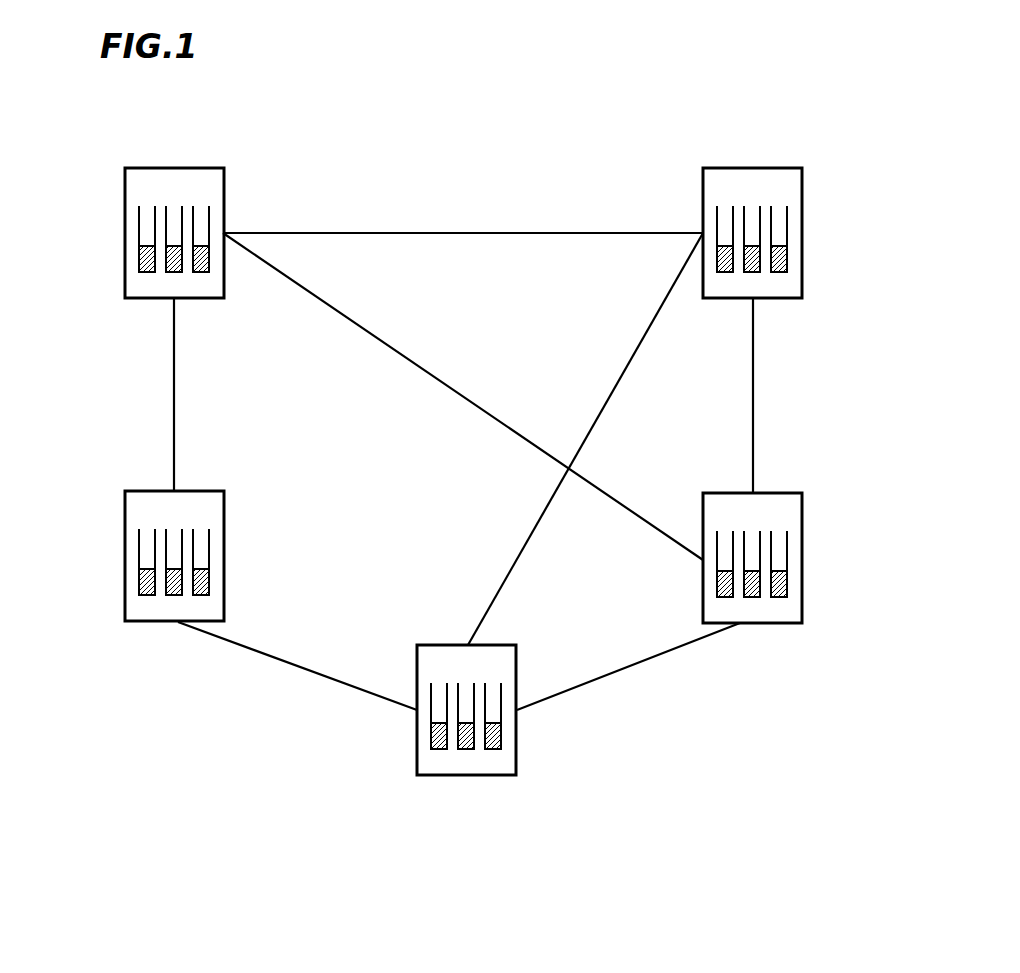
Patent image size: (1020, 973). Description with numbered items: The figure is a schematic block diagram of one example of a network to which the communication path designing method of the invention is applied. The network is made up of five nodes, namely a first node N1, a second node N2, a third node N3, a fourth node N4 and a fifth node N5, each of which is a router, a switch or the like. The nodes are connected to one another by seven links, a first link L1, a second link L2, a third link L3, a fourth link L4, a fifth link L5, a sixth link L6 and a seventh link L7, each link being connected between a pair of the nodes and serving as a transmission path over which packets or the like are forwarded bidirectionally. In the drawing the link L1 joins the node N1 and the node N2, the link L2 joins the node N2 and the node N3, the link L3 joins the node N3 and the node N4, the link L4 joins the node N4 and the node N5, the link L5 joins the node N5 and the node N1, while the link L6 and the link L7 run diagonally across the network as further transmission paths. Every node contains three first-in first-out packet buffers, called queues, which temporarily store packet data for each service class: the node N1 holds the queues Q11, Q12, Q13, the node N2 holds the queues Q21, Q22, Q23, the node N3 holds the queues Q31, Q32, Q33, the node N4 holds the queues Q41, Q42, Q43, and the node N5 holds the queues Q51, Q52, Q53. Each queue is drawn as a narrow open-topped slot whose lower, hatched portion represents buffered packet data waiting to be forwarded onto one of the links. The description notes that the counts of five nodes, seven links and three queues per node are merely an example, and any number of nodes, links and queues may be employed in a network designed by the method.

The node N1 is at (802, 198).
The node N2 is at (802, 532).
The node N3 is at (502, 776).
The node N4 is at (224, 537).
The node N5 is at (224, 197).
The link L1 is at (754, 442).
The link L2 is at (653, 658).
The link L3 is at (273, 660).
The link L4 is at (174, 457).
The link L5 is at (457, 233).
The link L6 is at (612, 392).
The link L7 is at (442, 382).
The queue Q11 is at (722, 274).
The queue Q12 is at (755, 273).
The queue Q13 is at (788, 260).
The queue Q21 is at (720, 590).
The queue Q22 is at (755, 597).
The queue Q23 is at (788, 590).
The queue Q31 is at (432, 742).
The queue Q32 is at (466, 749).
The queue Q33 is at (502, 740).
The queue Q41 is at (139, 578).
The queue Q42 is at (174, 595).
The queue Q43 is at (211, 585).
The queue Q51 is at (140, 258).
The queue Q52 is at (172, 272).
The queue Q53 is at (201, 272).